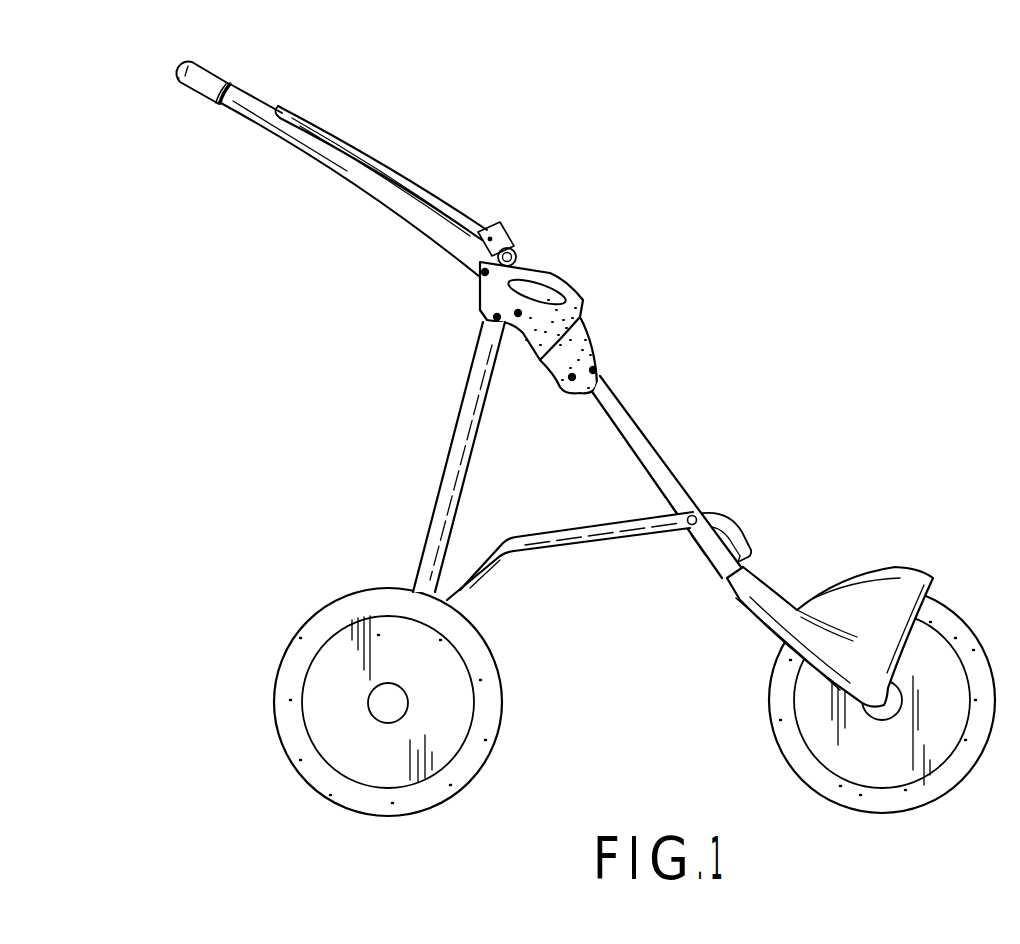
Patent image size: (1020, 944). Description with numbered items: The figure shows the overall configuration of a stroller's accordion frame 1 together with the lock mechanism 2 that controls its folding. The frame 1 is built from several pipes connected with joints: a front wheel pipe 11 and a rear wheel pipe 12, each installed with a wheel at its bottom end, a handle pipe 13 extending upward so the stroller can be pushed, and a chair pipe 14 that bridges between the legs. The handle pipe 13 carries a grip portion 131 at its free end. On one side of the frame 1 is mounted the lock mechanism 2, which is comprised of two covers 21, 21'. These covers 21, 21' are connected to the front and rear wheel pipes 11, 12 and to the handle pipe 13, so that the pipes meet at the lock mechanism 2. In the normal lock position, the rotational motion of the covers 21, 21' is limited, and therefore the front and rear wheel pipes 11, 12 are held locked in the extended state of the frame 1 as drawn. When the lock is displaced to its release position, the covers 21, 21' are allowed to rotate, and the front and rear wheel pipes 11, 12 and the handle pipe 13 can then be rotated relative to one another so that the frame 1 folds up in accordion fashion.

The accordion frame 1 is at (750, 292).
The lock mechanism 2 is at (592, 328).
The front wheel pipe 11 is at (663, 478).
The rear wheel pipe 12 is at (446, 489).
The handle pipe 13 is at (246, 98).
The handle grip cap 131 is at (172, 68).
The chair pipe 14 is at (573, 540).
The cover 21 is at (491, 311).
The cover 21' is at (562, 401).